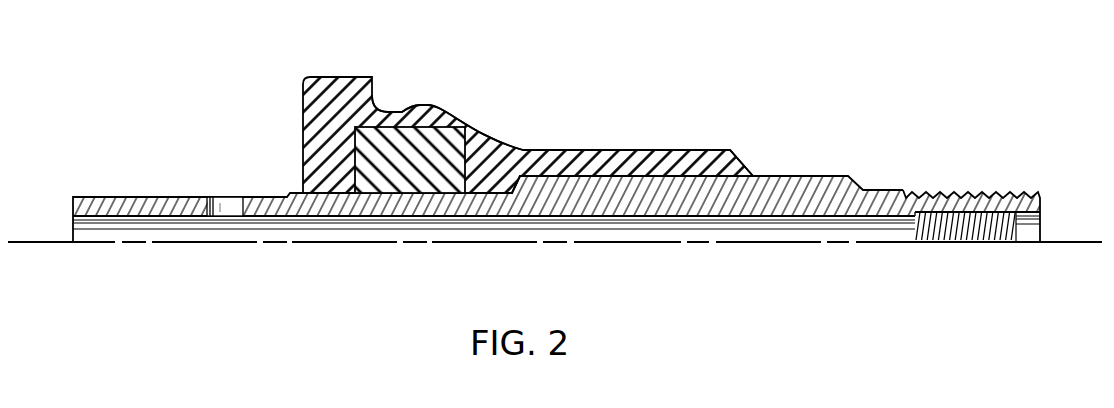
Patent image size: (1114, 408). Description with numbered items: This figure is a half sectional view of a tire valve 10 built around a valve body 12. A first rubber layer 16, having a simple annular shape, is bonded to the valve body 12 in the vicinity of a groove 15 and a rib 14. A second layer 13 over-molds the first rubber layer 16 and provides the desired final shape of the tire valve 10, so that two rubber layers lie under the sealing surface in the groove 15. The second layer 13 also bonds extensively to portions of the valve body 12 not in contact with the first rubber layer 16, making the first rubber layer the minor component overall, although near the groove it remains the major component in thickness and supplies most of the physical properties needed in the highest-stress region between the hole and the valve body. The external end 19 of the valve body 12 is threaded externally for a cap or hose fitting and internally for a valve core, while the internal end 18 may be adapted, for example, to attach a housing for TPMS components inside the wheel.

The tire valve 10 is at (738, 88).
The valve body 12 is at (822, 177).
The second layer 13 is at (482, 137).
The rib 14 is at (423, 107).
The groove 15 is at (388, 110).
The first rubber layer 16 is at (418, 182).
The internal end 18 is at (150, 197).
The external end 19 is at (958, 200).